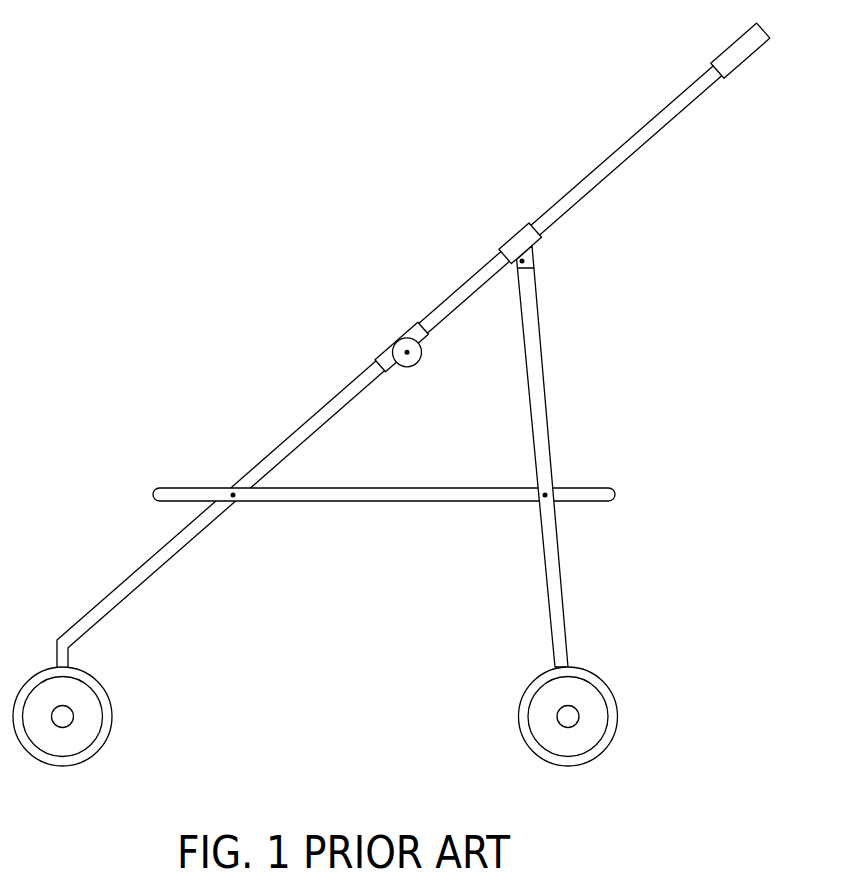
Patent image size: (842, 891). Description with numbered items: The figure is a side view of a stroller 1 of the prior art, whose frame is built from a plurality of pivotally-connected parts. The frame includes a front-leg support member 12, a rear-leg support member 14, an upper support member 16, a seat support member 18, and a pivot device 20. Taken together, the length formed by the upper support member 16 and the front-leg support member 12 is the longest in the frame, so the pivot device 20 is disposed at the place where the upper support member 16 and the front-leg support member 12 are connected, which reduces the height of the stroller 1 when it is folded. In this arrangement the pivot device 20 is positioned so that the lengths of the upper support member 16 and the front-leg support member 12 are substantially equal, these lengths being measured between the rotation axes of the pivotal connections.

The stroller 1 is at (247, 103).
The front-leg support member 12 is at (318, 423).
The rear-leg support member 14 is at (537, 375).
The upper support member 16 is at (457, 298).
The seat support member 18 is at (394, 494).
The pivot device 20 is at (395, 352).